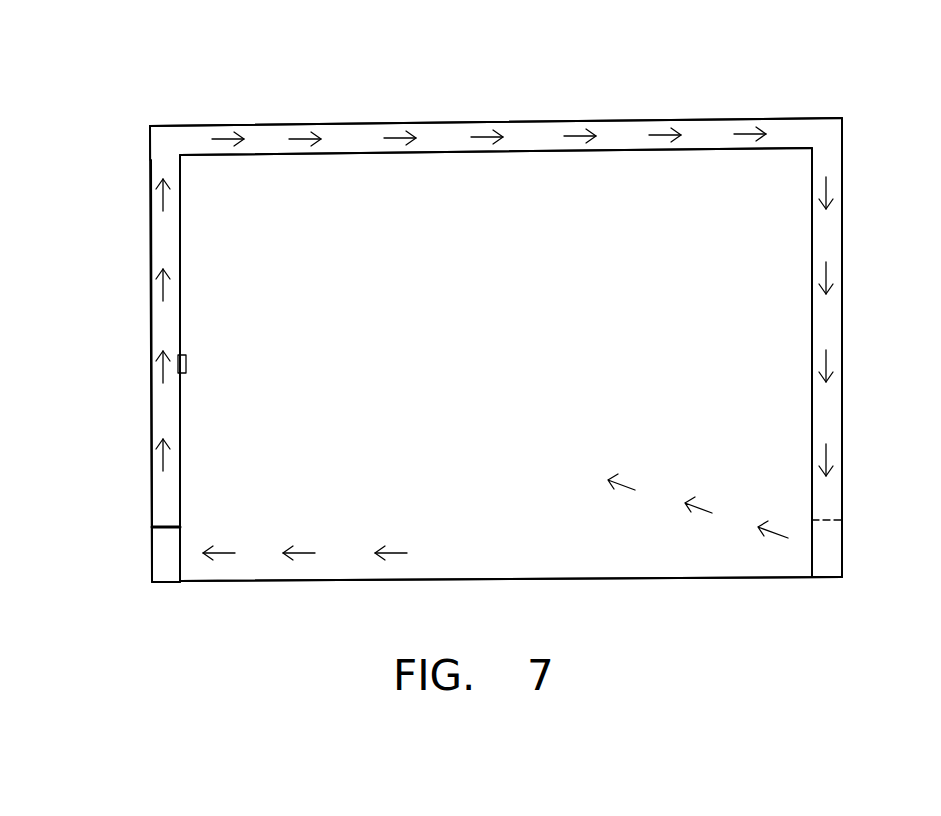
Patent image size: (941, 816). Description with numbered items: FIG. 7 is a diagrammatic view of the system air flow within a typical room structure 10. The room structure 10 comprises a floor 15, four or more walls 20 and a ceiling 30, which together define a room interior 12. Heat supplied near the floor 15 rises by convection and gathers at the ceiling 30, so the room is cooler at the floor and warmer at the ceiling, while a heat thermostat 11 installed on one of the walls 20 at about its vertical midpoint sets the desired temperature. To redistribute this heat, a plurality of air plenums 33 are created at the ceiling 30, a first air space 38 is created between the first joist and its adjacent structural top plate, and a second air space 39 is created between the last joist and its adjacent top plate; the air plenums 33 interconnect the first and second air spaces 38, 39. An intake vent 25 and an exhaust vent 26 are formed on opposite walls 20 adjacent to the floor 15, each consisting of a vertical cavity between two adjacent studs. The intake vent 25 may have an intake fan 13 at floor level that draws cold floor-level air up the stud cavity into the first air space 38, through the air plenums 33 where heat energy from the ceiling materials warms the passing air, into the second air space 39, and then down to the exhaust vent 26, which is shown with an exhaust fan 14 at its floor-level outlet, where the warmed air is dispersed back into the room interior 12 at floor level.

The room structure 10 is at (903, 133).
The heat thermostat 11 is at (182, 355).
The room interior 12 is at (582, 311).
The intake fan 13 is at (165, 556).
The lower right section 14 is at (826, 551).
The floor 15 is at (553, 580).
The wall 20 is at (180, 388).
The intake vent 25 is at (163, 406).
The exhaust vent 26 is at (841, 404).
The ceiling 30 is at (527, 155).
The air plenum 33 is at (445, 133).
The first air space 38 is at (163, 140).
The second air space 39 is at (824, 133).